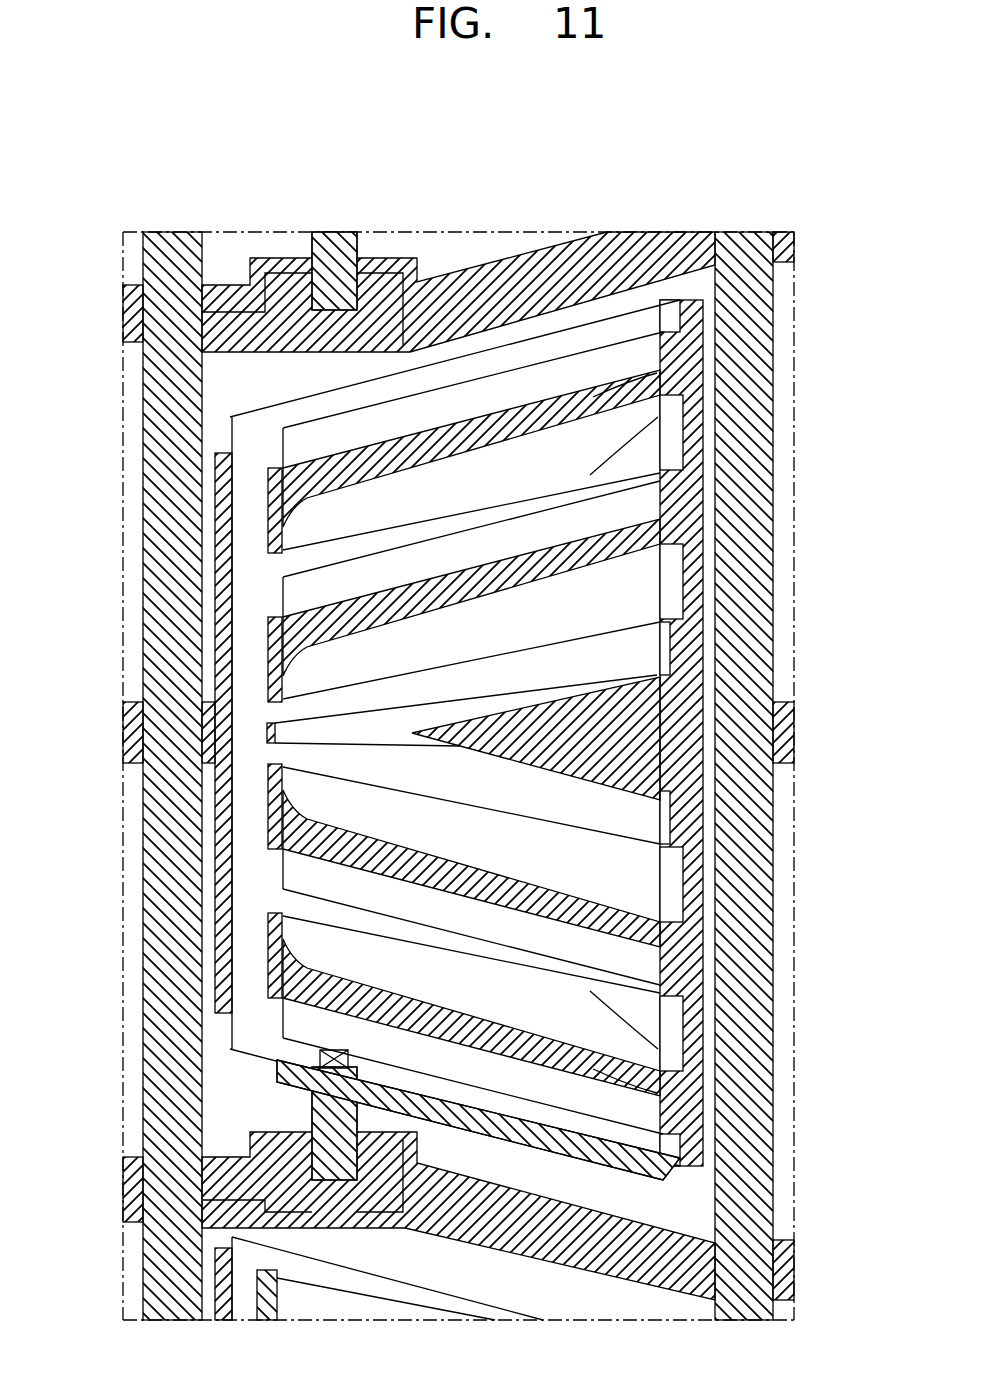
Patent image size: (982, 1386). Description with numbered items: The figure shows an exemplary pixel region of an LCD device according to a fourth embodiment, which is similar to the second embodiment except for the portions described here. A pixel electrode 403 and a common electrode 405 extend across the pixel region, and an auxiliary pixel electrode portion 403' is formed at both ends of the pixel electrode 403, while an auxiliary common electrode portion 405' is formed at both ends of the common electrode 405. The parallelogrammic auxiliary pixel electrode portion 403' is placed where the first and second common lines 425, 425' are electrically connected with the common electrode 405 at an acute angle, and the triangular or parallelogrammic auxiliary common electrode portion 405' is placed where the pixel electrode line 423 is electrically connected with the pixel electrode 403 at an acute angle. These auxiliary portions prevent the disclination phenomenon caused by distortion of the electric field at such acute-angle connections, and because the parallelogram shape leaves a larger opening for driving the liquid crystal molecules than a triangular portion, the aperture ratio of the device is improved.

The pixel electrode 403 is at (585, 441).
The common electrode 405 is at (585, 431).
The pixel electrode line 423 is at (250, 830).
The first common line 425 is at (136, 733).
The second common line 425' is at (777, 733).
The auxiliary pixel electrode portion 403' is at (588, 1025).
The auxiliary common electrode portion 405' is at (588, 1028).